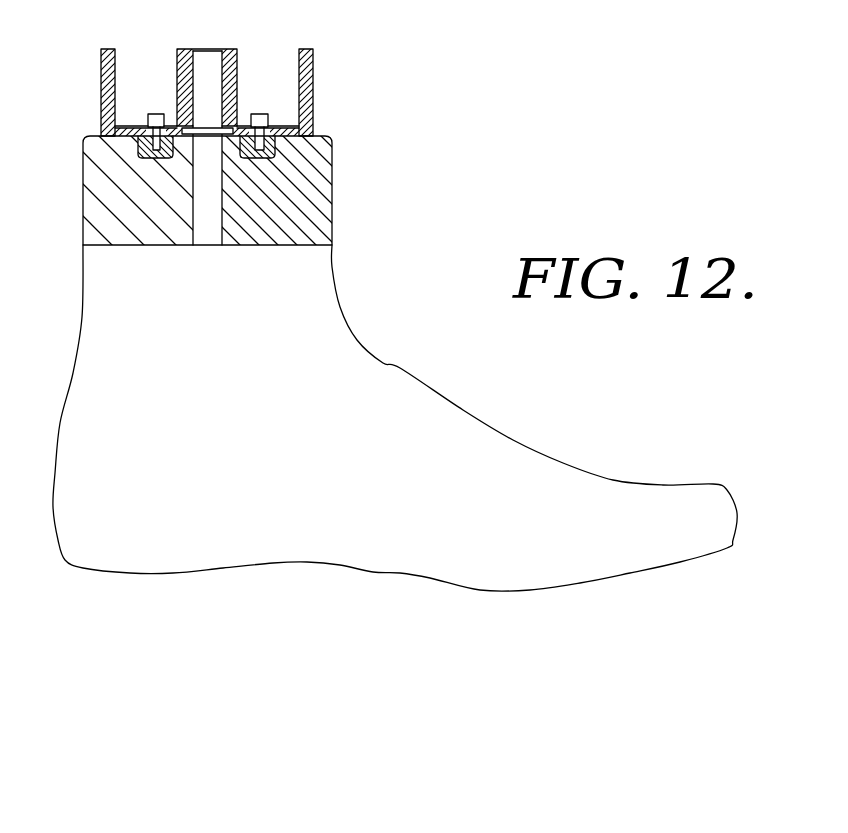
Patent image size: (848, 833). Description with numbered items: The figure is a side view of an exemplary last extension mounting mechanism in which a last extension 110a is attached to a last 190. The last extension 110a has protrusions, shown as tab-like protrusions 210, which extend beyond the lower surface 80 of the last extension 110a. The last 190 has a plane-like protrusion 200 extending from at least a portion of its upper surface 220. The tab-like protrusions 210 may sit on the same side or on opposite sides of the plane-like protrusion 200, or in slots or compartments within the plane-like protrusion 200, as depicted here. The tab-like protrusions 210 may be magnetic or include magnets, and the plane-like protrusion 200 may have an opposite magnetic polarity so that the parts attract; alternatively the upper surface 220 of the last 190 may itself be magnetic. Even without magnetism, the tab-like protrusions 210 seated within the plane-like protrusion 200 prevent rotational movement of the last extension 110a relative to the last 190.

The last 190 is at (463, 410).
The plane-like protrusion 200 is at (322, 163).
The upper surface 220 is at (292, 240).
The tab-like protrusions 210 is at (240, 158).
The lower surface 80 is at (143, 160).
The last extension 110a is at (305, 50).